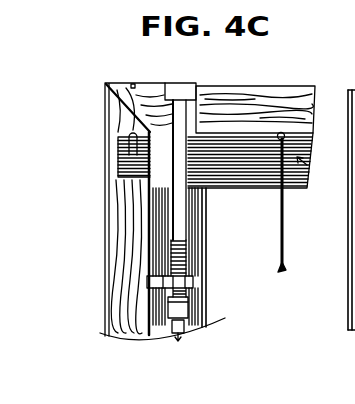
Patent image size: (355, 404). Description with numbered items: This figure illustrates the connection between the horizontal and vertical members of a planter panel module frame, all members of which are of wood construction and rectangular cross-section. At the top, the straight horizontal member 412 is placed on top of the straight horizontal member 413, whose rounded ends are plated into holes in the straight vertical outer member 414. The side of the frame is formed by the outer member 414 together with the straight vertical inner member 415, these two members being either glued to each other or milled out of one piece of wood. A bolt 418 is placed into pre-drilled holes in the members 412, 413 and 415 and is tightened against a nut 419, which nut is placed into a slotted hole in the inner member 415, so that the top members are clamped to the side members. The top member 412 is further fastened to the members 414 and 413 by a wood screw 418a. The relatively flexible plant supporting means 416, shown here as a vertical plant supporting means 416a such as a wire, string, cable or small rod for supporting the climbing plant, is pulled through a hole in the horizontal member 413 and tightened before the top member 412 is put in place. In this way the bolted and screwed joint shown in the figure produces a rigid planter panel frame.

The straight horizontal member 412 is at (243, 98).
The straight horizontal member 413 is at (232, 170).
The straight vertical outer member 414 is at (188, 334).
The straight vertical inner member 415 is at (192, 307).
The relatively flexible plant supporting means 416 is at (312, 203).
The relatively flexible plant supporting means 416a is at (284, 228).
The bolt 418 is at (178, 86).
The wood screw 418a is at (116, 128).
The nut 419 is at (190, 283).